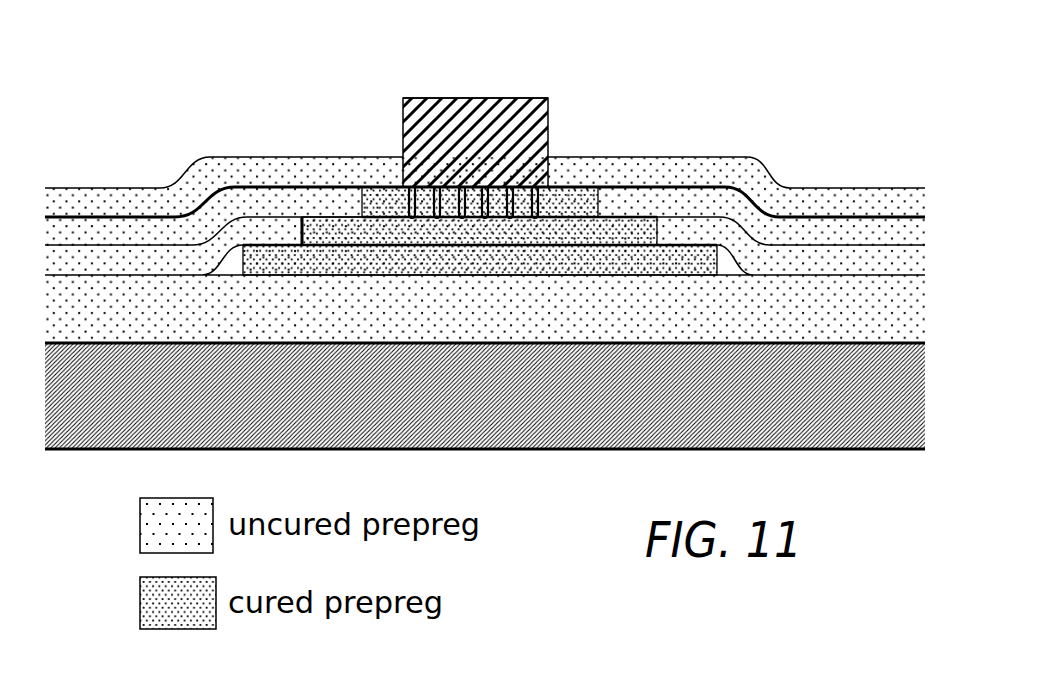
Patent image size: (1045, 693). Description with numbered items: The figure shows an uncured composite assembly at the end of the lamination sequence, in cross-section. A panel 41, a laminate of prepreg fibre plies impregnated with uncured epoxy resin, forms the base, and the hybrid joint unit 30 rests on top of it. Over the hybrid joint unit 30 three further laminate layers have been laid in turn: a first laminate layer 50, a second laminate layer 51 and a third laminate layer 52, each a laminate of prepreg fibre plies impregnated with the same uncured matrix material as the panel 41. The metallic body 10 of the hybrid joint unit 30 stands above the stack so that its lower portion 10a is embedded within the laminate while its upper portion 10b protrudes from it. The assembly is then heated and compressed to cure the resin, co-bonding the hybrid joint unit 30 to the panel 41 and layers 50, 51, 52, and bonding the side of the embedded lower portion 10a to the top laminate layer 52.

The body 10 is at (467, 118).
The lower portion of the body 10a is at (548, 177).
The upper portion of the body 10b is at (548, 118).
The hybrid joint unit 30 is at (467, 115).
The panel 41 is at (862, 305).
The first laminate layer 50 is at (67, 253).
The second laminate layer 51 is at (153, 235).
The third laminate layer 52 is at (220, 170).